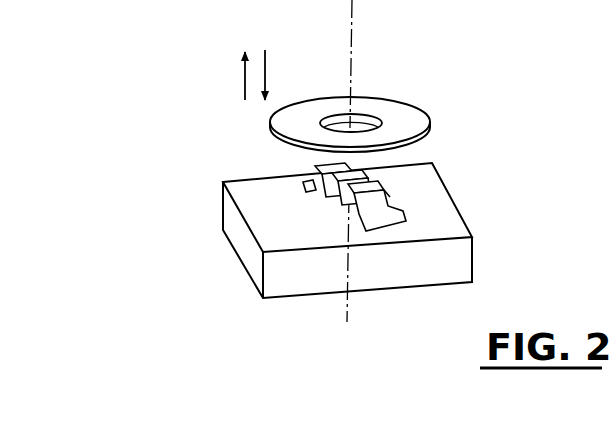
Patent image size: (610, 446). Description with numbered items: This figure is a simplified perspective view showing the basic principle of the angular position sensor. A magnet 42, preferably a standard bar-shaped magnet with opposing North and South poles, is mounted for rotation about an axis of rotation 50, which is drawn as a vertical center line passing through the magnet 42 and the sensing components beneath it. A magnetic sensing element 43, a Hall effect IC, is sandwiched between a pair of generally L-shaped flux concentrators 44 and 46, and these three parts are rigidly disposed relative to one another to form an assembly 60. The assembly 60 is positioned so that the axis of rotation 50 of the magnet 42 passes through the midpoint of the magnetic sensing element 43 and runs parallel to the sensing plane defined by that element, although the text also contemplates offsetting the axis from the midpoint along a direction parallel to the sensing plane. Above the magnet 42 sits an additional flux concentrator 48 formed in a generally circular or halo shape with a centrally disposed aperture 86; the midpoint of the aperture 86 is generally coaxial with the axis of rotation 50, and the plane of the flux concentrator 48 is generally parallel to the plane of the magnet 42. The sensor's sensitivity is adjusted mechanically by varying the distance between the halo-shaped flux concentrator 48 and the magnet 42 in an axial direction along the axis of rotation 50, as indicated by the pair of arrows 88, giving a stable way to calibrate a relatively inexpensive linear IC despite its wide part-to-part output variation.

The magnet 42 is at (448, 212).
The magnetic sensing element 43 is at (335, 222).
The flux concentrator 44 is at (313, 192).
The flux concentrator 46 is at (362, 224).
The flux concentrator 48 is at (357, 106).
The axis of rotation 50 is at (356, 56).
The assembly 60 is at (288, 160).
The aperture 86 is at (377, 121).
The arrows 88 is at (240, 77).